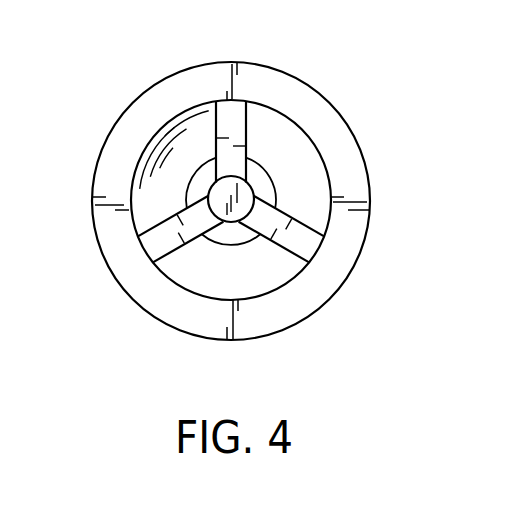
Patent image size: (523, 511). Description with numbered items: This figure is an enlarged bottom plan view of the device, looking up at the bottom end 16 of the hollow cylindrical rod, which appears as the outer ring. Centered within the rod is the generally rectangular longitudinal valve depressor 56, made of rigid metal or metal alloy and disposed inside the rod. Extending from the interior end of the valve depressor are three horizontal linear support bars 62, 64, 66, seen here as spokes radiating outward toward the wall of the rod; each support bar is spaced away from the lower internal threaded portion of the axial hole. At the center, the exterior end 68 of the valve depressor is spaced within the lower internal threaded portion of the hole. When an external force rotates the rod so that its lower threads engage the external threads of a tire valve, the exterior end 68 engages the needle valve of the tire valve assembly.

The bottom end 16 is at (222, 68).
The valve depressor 56 is at (254, 192).
The horizontal linear support bar 62 is at (157, 237).
The horizontal linear support bar 64 is at (238, 125).
The horizontal linear support bar 66 is at (310, 249).
The exterior end 68 is at (221, 203).